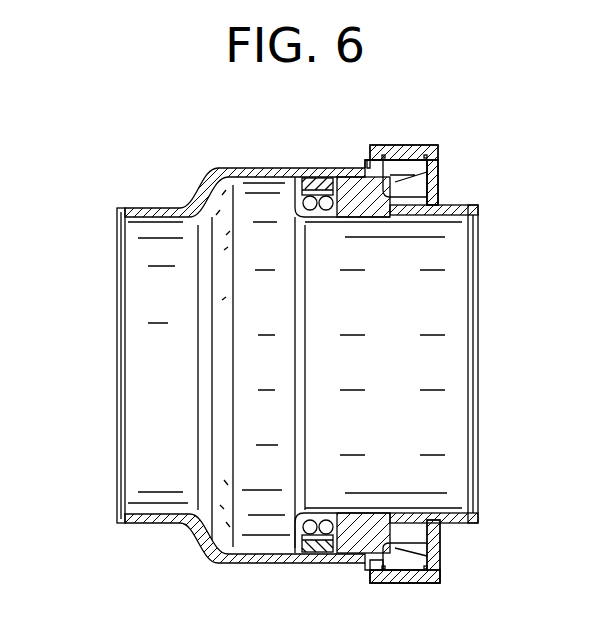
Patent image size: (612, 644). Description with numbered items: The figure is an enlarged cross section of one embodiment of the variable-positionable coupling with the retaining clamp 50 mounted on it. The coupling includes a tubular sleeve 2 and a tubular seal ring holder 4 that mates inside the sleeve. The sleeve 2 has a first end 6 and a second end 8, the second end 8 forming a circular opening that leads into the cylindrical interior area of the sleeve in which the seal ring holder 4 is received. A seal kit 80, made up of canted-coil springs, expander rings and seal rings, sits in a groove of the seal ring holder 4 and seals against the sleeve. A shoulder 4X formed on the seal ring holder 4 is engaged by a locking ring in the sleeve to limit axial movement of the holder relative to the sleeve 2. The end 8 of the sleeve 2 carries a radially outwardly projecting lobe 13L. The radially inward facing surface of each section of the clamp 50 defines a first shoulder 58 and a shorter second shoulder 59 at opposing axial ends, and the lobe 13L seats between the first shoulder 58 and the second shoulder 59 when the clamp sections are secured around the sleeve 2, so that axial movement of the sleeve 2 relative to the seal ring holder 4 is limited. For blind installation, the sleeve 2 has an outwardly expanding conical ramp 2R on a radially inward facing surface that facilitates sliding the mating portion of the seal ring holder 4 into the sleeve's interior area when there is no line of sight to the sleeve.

The sleeve 2 is at (164, 208).
The first end 6 is at (117, 212).
The outwardly expanding conical ramp 2R is at (422, 549).
The shoulder 4X is at (398, 192).
The retaining clamp 50 is at (408, 128).
The second end 8 is at (438, 150).
The lobe 13L is at (396, 152).
The first shoulder 58 is at (413, 542).
The second shoulder 59 is at (398, 574).
The seal ring holder 4 is at (375, 218).
The seal kit 80 is at (321, 228).